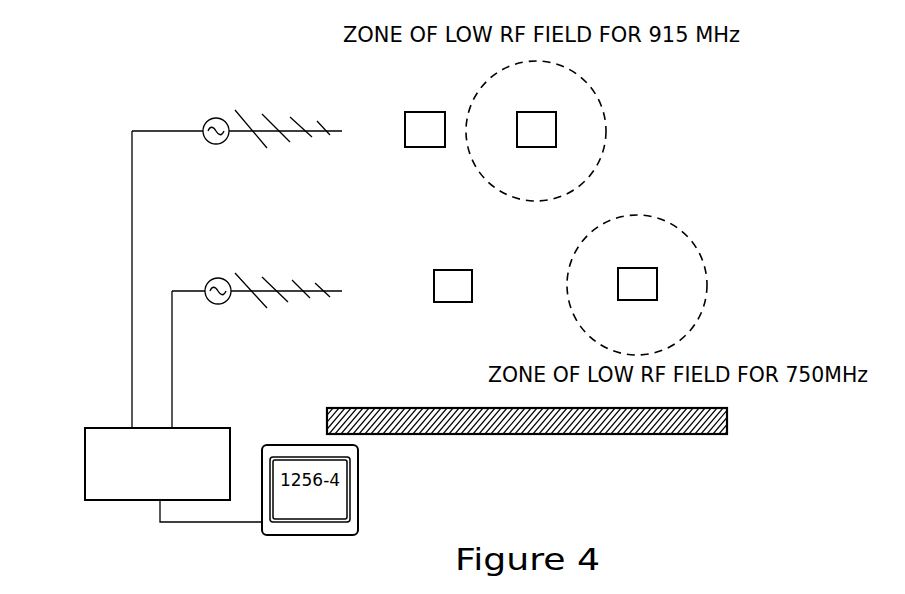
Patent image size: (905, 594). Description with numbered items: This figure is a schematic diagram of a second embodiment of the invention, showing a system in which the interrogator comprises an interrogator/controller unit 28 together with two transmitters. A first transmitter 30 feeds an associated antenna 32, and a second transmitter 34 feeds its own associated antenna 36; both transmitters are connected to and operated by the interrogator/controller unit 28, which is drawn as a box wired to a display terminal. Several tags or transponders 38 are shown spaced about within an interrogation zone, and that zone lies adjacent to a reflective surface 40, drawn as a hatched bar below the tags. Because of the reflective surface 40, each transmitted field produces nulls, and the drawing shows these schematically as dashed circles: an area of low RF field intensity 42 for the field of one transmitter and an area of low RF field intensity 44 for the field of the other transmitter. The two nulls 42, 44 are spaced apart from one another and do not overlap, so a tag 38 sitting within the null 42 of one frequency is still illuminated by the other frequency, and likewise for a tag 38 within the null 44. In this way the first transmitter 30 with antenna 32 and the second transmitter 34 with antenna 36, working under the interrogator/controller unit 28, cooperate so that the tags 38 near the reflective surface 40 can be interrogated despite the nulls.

The interrogator/controller unit 28 is at (85, 465).
The first transmitter 30 is at (212, 281).
The antenna 32 is at (303, 289).
The second transmitter 34 is at (204, 124).
The antenna 36 is at (310, 128).
The tags or transponders 38 is at (428, 138).
The reflective surface 40 is at (487, 399).
The null or area of low RF field intensity 42 is at (599, 134).
The null or area of low RF field intensity 44 is at (702, 270).